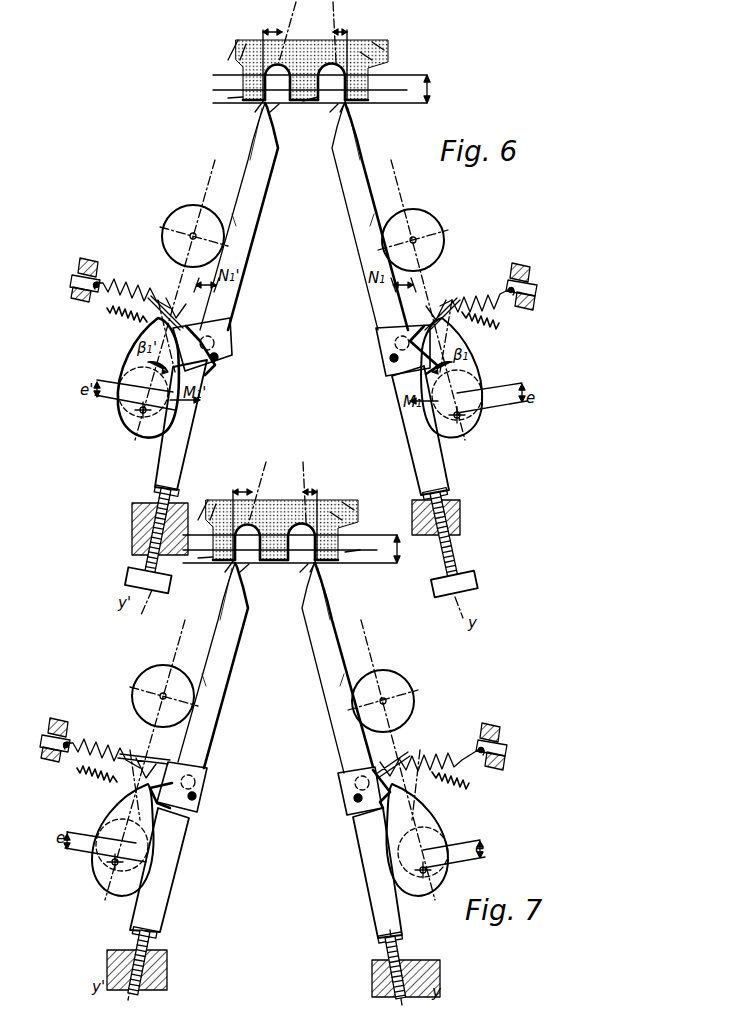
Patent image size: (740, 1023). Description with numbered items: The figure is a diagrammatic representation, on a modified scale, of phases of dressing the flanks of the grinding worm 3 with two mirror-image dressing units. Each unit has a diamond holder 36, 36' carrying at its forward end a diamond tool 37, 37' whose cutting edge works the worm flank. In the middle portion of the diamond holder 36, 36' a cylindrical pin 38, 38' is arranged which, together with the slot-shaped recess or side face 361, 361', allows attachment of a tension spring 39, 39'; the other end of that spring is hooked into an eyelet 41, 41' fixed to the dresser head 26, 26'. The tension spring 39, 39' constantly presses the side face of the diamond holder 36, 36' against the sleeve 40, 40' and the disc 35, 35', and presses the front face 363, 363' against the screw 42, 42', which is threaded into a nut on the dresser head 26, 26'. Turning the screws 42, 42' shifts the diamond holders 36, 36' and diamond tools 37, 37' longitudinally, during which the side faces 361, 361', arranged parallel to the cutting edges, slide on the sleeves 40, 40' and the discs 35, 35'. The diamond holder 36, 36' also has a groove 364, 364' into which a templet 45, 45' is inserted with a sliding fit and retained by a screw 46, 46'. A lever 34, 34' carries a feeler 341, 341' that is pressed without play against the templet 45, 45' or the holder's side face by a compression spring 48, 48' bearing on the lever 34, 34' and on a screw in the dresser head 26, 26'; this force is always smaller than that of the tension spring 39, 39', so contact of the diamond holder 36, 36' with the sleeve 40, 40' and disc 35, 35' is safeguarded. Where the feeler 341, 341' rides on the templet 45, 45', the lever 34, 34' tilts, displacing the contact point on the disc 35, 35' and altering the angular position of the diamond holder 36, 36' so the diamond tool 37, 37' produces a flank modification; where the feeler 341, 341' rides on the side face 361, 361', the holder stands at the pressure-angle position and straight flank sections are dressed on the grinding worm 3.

In FIG. 6, the grinding worm 3 is at (372, 56).
In FIG. 7, the grinding worm 3 is at (297, 521).
In FIG. 6, the dresser head 26 is at (521, 272).
In FIG. 7, the dresser head 26 is at (490, 730).
In FIG. 6, the dresser head 26' is at (87, 265).
In FIG. 7, the dresser head 26' is at (60, 723).
In FIG. 6, the lever 34 is at (461, 378).
In FIG. 7, the lever 34 is at (424, 840).
In FIG. 6, the lever 34' is at (138, 378).
In FIG. 7, the lever 34' is at (115, 840).
In FIG. 6, the disc 35 is at (470, 396).
In FIG. 7, the disc 35 is at (434, 848).
In FIG. 6, the disc 35' is at (133, 389).
In FIG. 7, the disc 35' is at (111, 842).
In FIG. 6, the diamond holder 36 is at (370, 216).
In FIG. 7, the diamond holder 36 is at (336, 668).
In FIG. 6, the diamond holder 36' is at (239, 216).
In FIG. 7, the diamond holder 36' is at (213, 665).
In FIG. 6, the diamond tool 37 is at (326, 121).
In FIG. 7, the diamond tool 37 is at (302, 569).
In FIG. 6, the diamond tool 37' is at (277, 113).
In FIG. 7, the diamond tool 37' is at (252, 573).
In FIG. 6, the cylindrical pin 38 is at (386, 349).
In FIG. 7, the cylindrical pin 38 is at (342, 788).
In FIG. 6, the cylindrical pin 38' is at (218, 344).
In FIG. 7, the cylindrical pin 38' is at (199, 785).
In FIG. 6, the tension spring 39 is at (477, 292).
In FIG. 7, the tension spring 39 is at (442, 751).
In FIG. 6, the tension spring 39' is at (132, 284).
In FIG. 7, the tension spring 39' is at (102, 742).
In FIG. 6, the sleeve 40 is at (414, 232).
In FIG. 7, the sleeve 40 is at (387, 694).
In FIG. 6, the sleeve 40' is at (191, 225).
In FIG. 7, the sleeve 40' is at (163, 685).
In FIG. 6, the eyelet 41 is at (533, 289).
In FIG. 7, the eyelet 41 is at (503, 747).
In FIG. 6, the eyelet 41' is at (73, 276).
In FIG. 7, the eyelet 41' is at (48, 735).
In FIG. 6, the screw 42 is at (448, 542).
In FIG. 7, the screw 42 is at (398, 967).
In FIG. 6, the screw 42' is at (156, 539).
In FIG. 7, the screw 42' is at (143, 962).
In FIG. 6, the templet 45 is at (395, 354).
In FIG. 7, the templet 45 is at (354, 795).
In FIG. 6, the templet 45' is at (220, 351).
In FIG. 7, the templet 45' is at (190, 800).
In FIG. 6, the screw 46 is at (379, 350).
In FIG. 7, the screw 46 is at (339, 789).
In FIG. 6, the screw 46' is at (228, 348).
In FIG. 7, the screw 46' is at (206, 787).
In FIG. 6, the compression spring 48 is at (492, 329).
In FIG. 7, the compression spring 48 is at (455, 786).
In FIG. 6, the compression spring 48' is at (118, 325).
In FIG. 7, the compression spring 48' is at (93, 780).
In FIG. 6, the feeler 341 is at (443, 306).
In FIG. 7, the feeler 341 is at (388, 758).
In FIG. 6, the feeler 341' is at (166, 304).
In FIG. 7, the feeler 341' is at (151, 758).
In FIG. 6, the slot-shaped recess 361 is at (388, 207).
In FIG. 7, the slot-shaped recess 361 is at (358, 662).
In FIG. 6, the side face 361' is at (221, 206).
In FIG. 7, the side face 361' is at (193, 656).
In FIG. 6, the front face 363 is at (455, 492).
In FIG. 7, the front face 363 is at (412, 932).
In FIG. 6, the front face 363' is at (145, 484).
In FIG. 7, the front face 363' is at (124, 933).
In FIG. 6, the groove 364 is at (403, 430).
In FIG. 7, the groove 364 is at (361, 873).
In FIG. 6, the groove 364' is at (202, 425).
In FIG. 7, the groove 364' is at (176, 870).